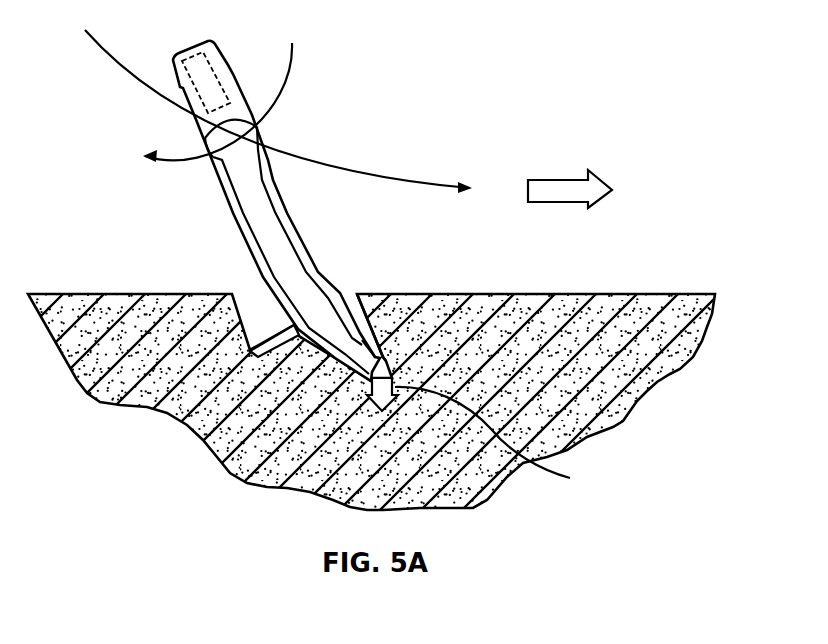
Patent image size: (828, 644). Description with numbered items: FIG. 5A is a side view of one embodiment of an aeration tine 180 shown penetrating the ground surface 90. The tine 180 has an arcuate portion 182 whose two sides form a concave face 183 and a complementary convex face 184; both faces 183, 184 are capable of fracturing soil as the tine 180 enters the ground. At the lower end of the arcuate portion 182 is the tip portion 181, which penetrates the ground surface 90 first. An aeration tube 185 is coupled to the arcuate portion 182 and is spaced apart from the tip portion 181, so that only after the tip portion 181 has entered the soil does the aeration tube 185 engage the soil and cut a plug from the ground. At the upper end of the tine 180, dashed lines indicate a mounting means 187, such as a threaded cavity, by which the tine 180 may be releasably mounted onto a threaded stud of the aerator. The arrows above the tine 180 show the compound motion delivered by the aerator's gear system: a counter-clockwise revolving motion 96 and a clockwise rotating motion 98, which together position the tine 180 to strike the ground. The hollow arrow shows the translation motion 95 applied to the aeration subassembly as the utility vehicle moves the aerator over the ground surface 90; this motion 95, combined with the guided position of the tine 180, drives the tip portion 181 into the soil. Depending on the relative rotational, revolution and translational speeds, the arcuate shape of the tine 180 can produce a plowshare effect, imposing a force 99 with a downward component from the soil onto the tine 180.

The ground surface 90 is at (580, 294).
The translation motion 95 is at (543, 185).
The revolving motion 96 is at (128, 72).
The rotating motion 98 is at (292, 75).
The force 99 is at (496, 440).
The aeration tine 180 is at (256, 192).
The tip portion 181 is at (400, 322).
The arcuate portion 182 is at (300, 282).
The concave face 183 is at (306, 239).
The convex face 184 is at (236, 226).
The aeration tube 185 is at (248, 347).
The handle insert 187 is at (200, 68).